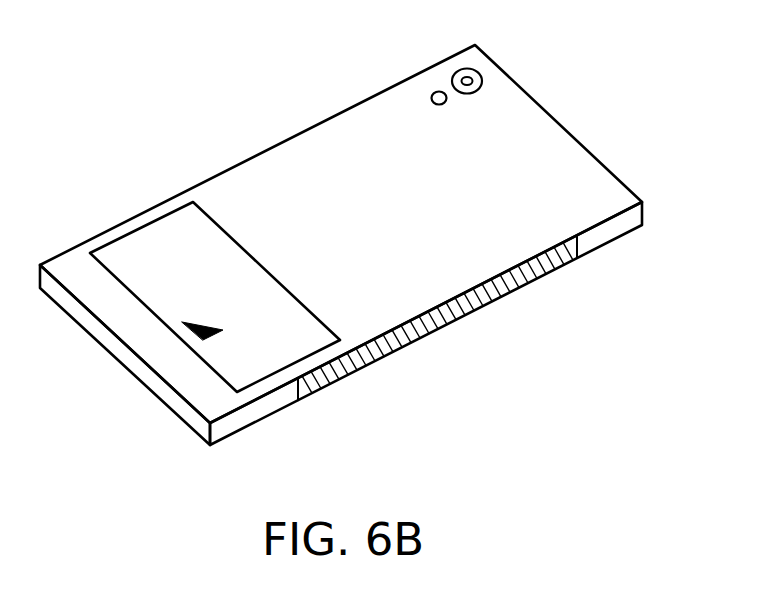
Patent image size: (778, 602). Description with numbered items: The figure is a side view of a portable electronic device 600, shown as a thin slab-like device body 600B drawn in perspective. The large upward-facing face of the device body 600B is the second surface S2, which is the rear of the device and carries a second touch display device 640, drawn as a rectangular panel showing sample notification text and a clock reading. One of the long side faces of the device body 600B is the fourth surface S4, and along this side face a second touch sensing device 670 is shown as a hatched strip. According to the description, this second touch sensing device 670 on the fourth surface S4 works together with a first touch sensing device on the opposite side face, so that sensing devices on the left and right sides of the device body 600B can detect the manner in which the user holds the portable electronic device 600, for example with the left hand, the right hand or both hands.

The portable electronic device 600 is at (351, 243).
The device body 600B is at (351, 233).
The second surface S2 is at (377, 133).
The fourth surface S4 is at (605, 230).
The second touch display device 640 is at (162, 232).
The second touch sensing device 670 is at (463, 303).